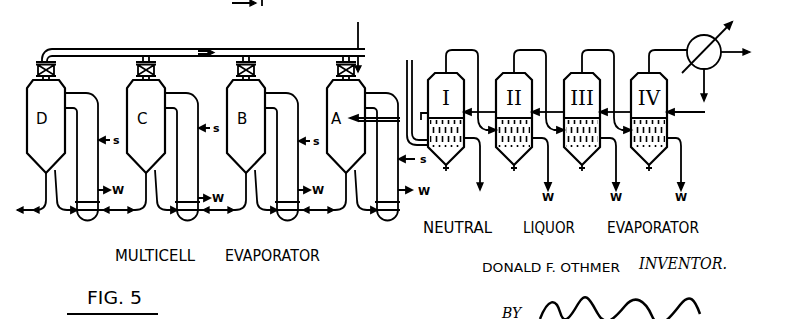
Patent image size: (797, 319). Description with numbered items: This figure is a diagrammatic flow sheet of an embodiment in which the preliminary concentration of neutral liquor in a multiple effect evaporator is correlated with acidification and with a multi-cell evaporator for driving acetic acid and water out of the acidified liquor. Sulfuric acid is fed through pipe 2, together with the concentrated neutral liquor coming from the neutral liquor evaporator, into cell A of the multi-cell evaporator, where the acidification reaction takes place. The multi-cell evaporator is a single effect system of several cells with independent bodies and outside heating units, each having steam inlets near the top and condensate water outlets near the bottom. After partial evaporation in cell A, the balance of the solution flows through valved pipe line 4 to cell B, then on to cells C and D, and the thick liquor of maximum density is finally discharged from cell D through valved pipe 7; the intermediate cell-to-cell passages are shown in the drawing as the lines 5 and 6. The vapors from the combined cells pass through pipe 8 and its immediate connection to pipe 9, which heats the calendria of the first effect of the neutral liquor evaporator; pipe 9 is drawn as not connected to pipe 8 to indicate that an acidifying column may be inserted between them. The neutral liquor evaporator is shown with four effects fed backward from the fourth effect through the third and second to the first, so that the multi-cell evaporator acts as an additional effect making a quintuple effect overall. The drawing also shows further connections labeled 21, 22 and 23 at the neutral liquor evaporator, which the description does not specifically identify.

The pipe 2 is at (365, 35).
The valved pipe line 4 is at (322, 204).
The liquor transfer line between cells C and B 5 is at (222, 204).
The liquor transfer line between cells D and C 6 is at (122, 204).
The valved pipe 7 is at (31, 204).
The pipe 8 is at (203, 44).
The pipe 9 is at (409, 58).
The vapor line to compressor 21 is at (715, 88).
The compressor discharge line 22 is at (747, 53).
The neutral liquor outlet line 23 is at (476, 175).